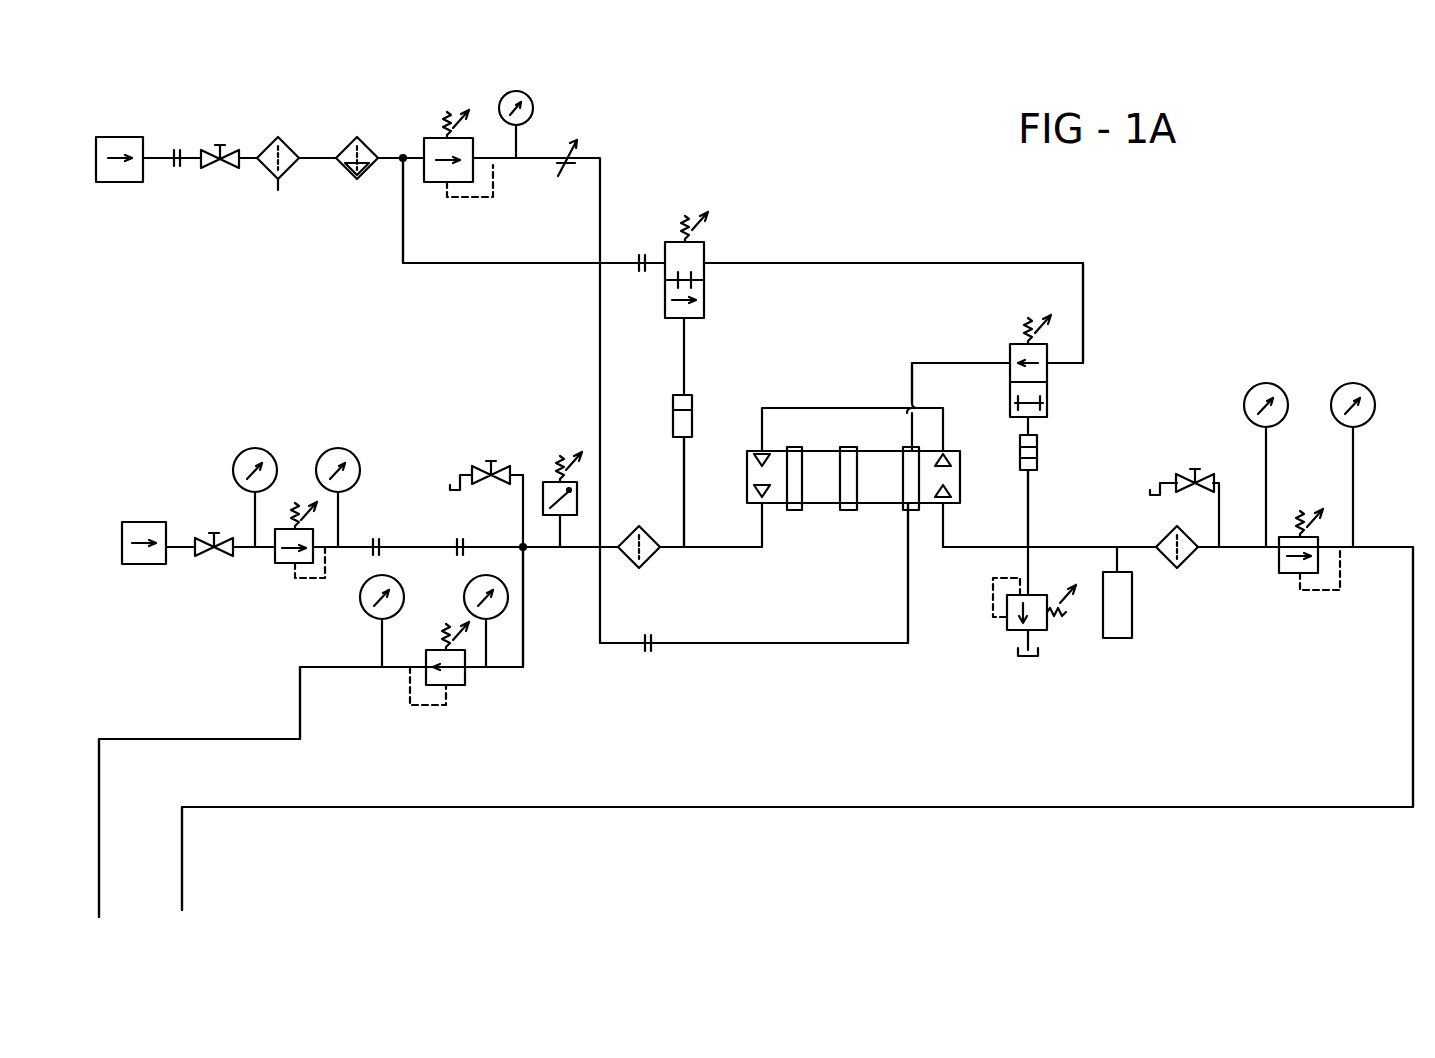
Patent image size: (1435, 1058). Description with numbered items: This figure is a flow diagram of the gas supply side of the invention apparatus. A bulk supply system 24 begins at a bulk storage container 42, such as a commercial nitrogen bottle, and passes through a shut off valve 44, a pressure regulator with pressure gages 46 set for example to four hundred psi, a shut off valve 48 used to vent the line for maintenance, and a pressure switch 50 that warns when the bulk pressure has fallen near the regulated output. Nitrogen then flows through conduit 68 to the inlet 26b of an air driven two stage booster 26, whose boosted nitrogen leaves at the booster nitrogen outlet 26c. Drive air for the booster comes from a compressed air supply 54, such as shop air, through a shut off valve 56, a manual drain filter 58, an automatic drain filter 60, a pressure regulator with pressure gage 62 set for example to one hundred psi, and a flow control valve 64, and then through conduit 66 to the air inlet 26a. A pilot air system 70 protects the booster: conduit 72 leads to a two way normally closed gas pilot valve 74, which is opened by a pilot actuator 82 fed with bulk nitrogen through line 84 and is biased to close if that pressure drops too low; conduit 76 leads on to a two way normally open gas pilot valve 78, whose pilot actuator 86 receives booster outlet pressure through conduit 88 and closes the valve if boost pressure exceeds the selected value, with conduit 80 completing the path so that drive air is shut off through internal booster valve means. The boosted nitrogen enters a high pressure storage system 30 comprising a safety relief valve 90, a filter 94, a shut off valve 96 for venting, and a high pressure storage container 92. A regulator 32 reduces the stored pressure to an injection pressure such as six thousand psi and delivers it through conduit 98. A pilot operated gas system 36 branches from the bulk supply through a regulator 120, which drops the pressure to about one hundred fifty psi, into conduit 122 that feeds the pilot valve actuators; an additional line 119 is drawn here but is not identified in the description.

The bulk supply system 24 is at (178, 516).
The booster 26 is at (880, 525).
The air inlet 26a is at (903, 505).
The inlet 26b is at (762, 505).
The booster nitrogen outlet 26c is at (945, 503).
The high pressure storage system 30 is at (1098, 526).
The regulator 32 is at (1313, 490).
The pilot operated gas system 36 is at (195, 726).
The bulk storage container 42 is at (140, 522).
The shut off valve 44 is at (218, 560).
The pressure regulator with pressure gages 46 is at (305, 492).
The shut off valve 48 is at (508, 455).
The pressure switch 50 is at (545, 464).
The compressed air supply 54 is at (130, 137).
The shut off valve 56 is at (230, 148).
The manual drain filter 58 is at (290, 145).
The automatic drain filter 60 is at (370, 150).
The pressure regulator with pressure gage 62 is at (437, 118).
The flow control valve 64 is at (599, 138).
The conduit 66 is at (862, 645).
The conduit 68 is at (415, 545).
The pilot air system 70 is at (555, 254).
The conduit 72 is at (515, 265).
The two way normally closed gas pilot valve 74 is at (657, 311).
The conduit 76 is at (923, 262).
The two way normally open gas pilot valve 78 is at (1010, 348).
The conduit 80 is at (930, 363).
The pilot actuator 82 is at (673, 416).
The line 84 is at (680, 488).
The pilot actuator 86 is at (1037, 455).
The conduit 88 is at (1030, 530).
The safety relief valve 90 is at (999, 658).
The high pressure storage container 92 is at (1132, 620).
The filter 94 is at (985, 550).
The shut off valve 96 is at (1194, 468).
The conduit 98 is at (182, 871).
The line 119 is at (525, 668).
The regulator 120 is at (425, 633).
The conduit 122 is at (99, 830).